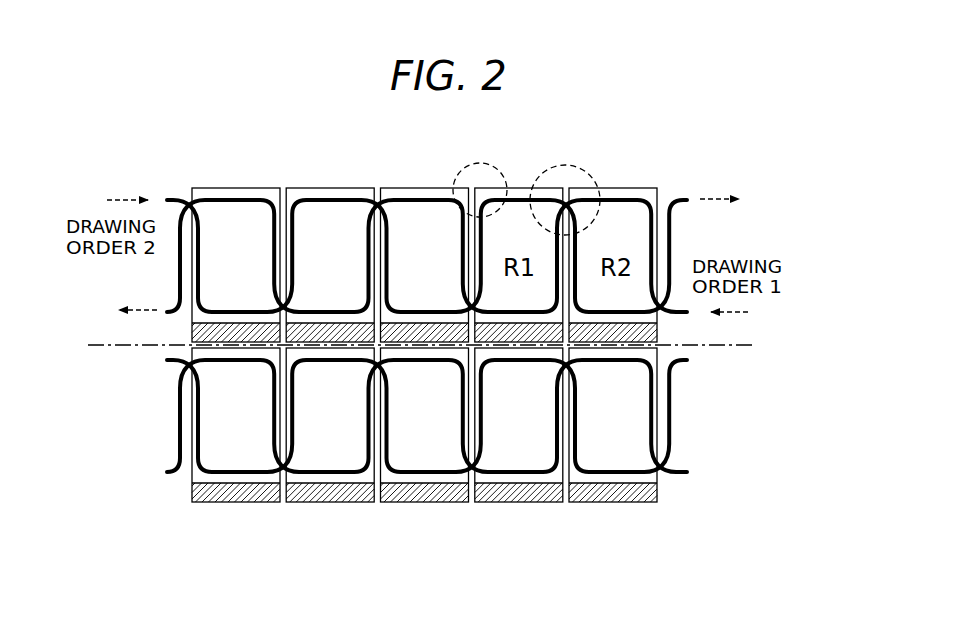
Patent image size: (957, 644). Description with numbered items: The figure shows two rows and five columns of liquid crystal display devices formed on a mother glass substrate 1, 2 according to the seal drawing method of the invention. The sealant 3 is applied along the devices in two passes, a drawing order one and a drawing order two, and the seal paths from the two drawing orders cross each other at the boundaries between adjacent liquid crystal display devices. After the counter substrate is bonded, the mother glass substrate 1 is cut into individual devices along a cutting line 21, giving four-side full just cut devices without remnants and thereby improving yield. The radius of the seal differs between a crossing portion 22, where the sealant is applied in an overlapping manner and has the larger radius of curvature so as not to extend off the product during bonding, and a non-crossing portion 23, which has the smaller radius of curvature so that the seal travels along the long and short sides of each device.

The mother glass substrate 1 is at (237, 458).
The mother glass substrate 2 is at (371, 518).
The sealant 3 is at (522, 474).
The cutting line 21 is at (727, 348).
The crossing portion 22 is at (568, 165).
The non-crossing portion 23 is at (478, 163).